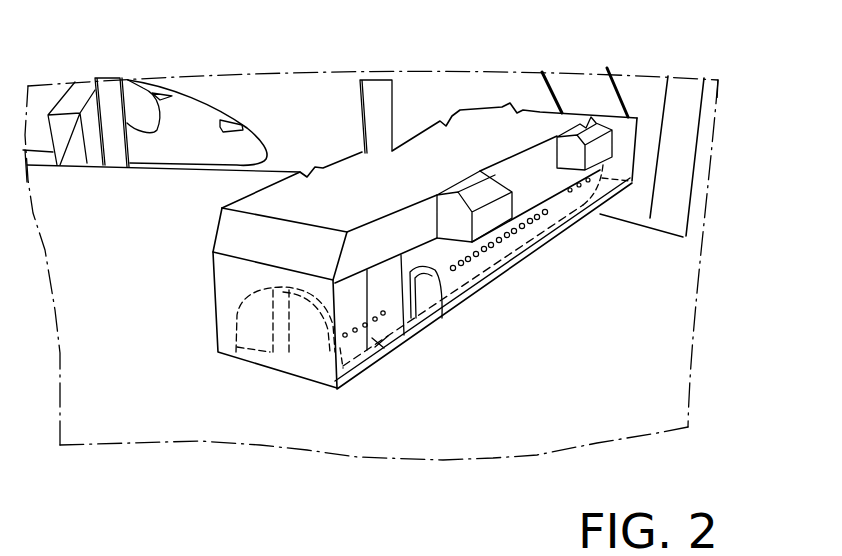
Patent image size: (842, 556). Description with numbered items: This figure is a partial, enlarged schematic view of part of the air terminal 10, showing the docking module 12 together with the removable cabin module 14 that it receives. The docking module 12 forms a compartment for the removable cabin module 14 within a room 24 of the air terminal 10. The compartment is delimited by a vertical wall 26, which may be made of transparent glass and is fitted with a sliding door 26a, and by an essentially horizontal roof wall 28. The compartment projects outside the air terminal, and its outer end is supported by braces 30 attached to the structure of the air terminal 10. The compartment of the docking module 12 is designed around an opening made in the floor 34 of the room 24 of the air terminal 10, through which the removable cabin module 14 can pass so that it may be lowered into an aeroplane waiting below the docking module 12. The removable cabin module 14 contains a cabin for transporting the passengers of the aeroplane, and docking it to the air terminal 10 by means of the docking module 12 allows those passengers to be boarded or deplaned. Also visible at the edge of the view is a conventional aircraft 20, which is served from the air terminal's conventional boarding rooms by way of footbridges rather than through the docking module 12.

The air terminal 10 is at (708, 195).
The docking module 12 is at (561, 239).
The removable cabin module 14 is at (507, 254).
The conventional aircraft 20 is at (187, 113).
The room 24 is at (210, 398).
The vertical wall 26 is at (307, 383).
The sliding door 26a is at (374, 340).
The roof wall 28 is at (278, 204).
The braces 30 is at (617, 90).
The floor 34 is at (640, 335).